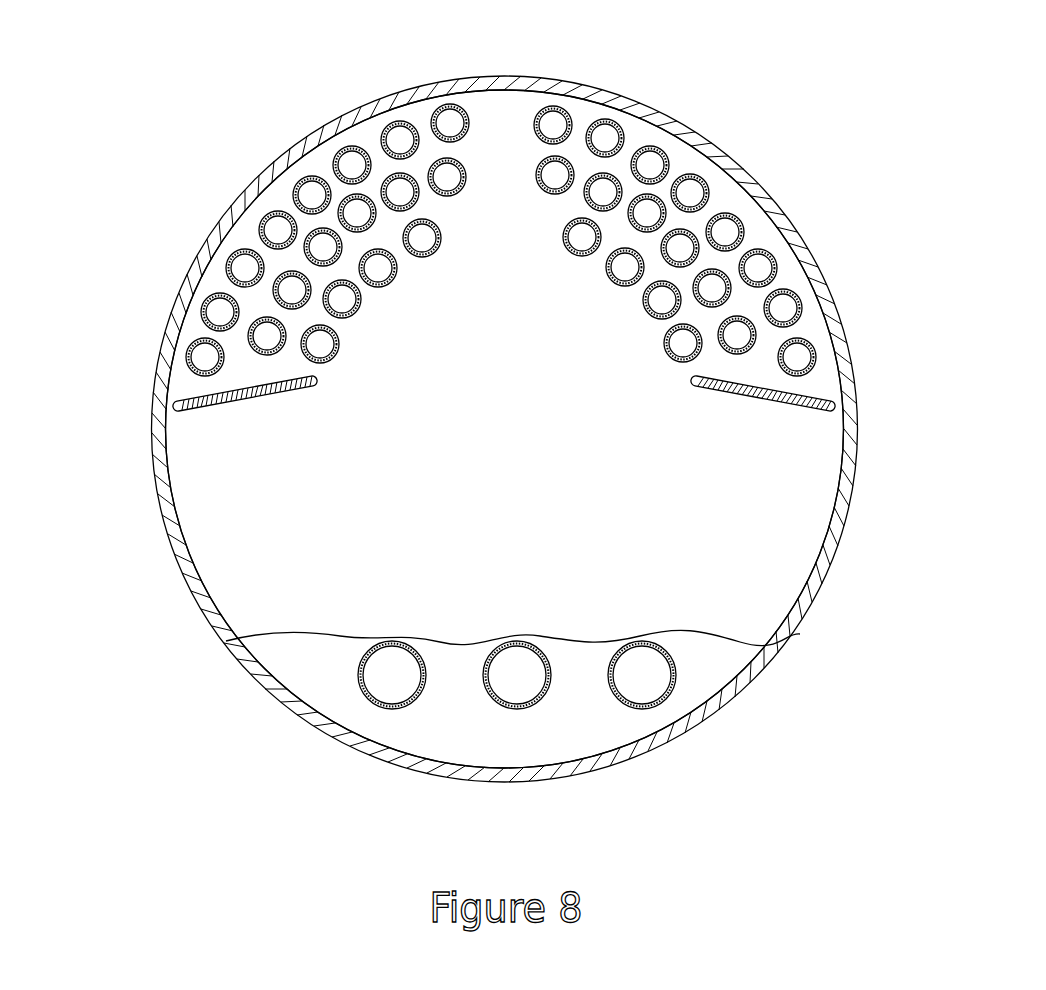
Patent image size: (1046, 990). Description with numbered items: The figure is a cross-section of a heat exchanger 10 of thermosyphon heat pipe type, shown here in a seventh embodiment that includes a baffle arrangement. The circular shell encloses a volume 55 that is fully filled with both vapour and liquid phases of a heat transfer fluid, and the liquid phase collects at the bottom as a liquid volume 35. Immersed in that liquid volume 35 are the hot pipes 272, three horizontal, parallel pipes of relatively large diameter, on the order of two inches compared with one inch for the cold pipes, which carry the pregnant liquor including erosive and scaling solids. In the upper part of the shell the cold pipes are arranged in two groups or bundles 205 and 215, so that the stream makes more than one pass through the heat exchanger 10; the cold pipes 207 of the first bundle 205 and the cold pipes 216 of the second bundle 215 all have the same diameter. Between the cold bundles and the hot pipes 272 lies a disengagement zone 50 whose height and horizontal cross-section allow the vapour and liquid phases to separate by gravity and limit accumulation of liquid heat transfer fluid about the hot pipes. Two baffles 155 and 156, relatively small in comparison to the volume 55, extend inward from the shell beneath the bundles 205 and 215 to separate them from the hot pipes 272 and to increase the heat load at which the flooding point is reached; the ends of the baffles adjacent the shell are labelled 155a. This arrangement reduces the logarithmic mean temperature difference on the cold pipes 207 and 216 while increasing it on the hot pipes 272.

The heat exchanger 10 is at (802, 175).
The liquid volume 35 is at (710, 668).
The disengagement zone 50 is at (488, 455).
The volume 55 is at (795, 508).
The baffle 155 is at (245, 392).
The baffle end 155a is at (172, 410).
The baffle 156 is at (778, 412).
The bundle 205 is at (318, 163).
The cold pipes 207 is at (350, 160).
The bundle 215 is at (797, 282).
The cold pipes 216 is at (607, 140).
The hot pipes 272 is at (655, 680).